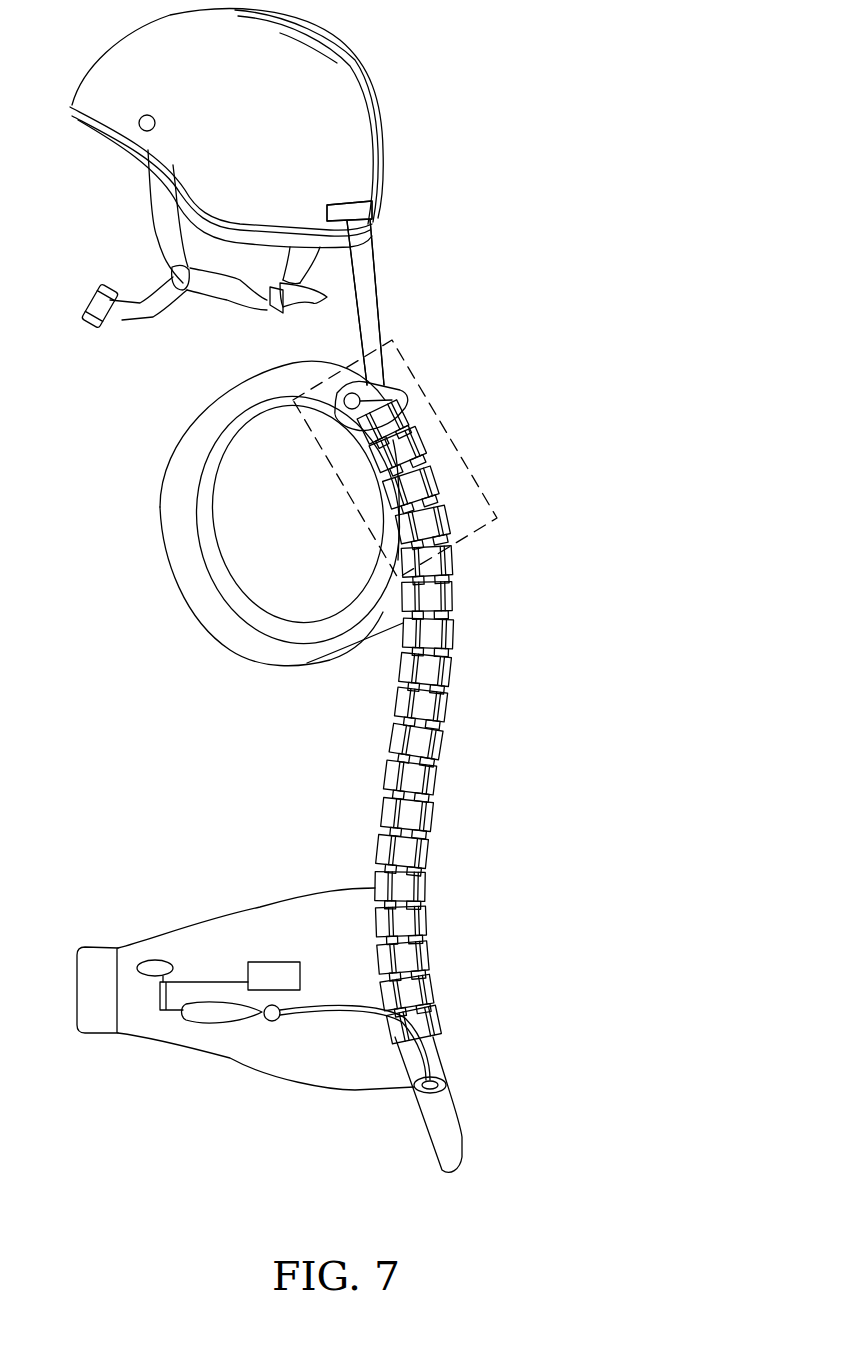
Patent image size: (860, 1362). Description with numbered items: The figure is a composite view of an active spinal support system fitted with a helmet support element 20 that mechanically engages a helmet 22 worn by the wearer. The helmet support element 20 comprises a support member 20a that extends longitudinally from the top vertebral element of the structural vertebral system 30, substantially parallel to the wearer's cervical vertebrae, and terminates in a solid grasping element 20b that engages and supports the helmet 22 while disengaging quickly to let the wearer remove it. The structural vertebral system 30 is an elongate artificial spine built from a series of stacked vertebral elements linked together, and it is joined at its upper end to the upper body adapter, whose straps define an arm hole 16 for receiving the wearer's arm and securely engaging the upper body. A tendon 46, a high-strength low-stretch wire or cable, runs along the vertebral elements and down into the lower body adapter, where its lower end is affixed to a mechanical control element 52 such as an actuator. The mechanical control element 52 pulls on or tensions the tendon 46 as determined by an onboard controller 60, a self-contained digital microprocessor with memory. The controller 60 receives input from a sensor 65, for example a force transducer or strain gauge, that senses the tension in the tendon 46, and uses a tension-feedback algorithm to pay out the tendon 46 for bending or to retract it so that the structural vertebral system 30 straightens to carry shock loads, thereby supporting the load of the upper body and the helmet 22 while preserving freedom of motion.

The helmet 22 is at (330, 120).
The helmet support element 20 is at (373, 245).
The support member 20a is at (373, 287).
The grasping element 20b is at (370, 201).
The arm hole 16 is at (300, 535).
The sensor 65 is at (361, 400).
The structural vertebral system 30 is at (470, 684).
The onboard controller 60 is at (302, 975).
The mechanical control element 52 is at (200, 1017).
The tendon 46 is at (343, 1012).